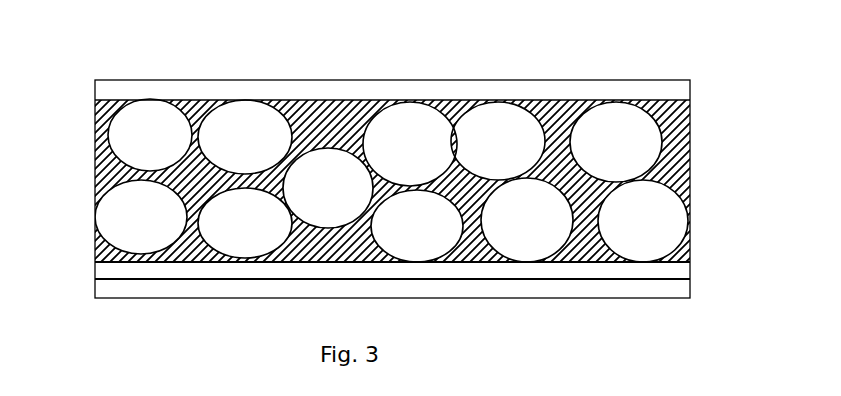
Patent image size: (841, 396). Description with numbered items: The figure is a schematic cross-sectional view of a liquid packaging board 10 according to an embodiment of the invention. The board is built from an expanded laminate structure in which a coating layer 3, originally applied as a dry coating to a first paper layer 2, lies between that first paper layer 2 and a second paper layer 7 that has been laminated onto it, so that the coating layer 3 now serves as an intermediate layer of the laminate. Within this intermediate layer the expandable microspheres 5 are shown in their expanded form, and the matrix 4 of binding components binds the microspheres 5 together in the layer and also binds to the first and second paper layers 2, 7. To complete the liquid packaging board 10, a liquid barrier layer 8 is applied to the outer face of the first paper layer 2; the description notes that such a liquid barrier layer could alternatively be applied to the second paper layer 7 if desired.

The liquid packaging board 10 is at (72, 78).
The first paper layer 2 is at (588, 268).
The coating layer 3 is at (692, 120).
The matrix 4 is at (325, 108).
The microspheres 5 is at (662, 212).
The second paper layer 7 is at (633, 90).
The liquid barrier layer 8 is at (465, 290).